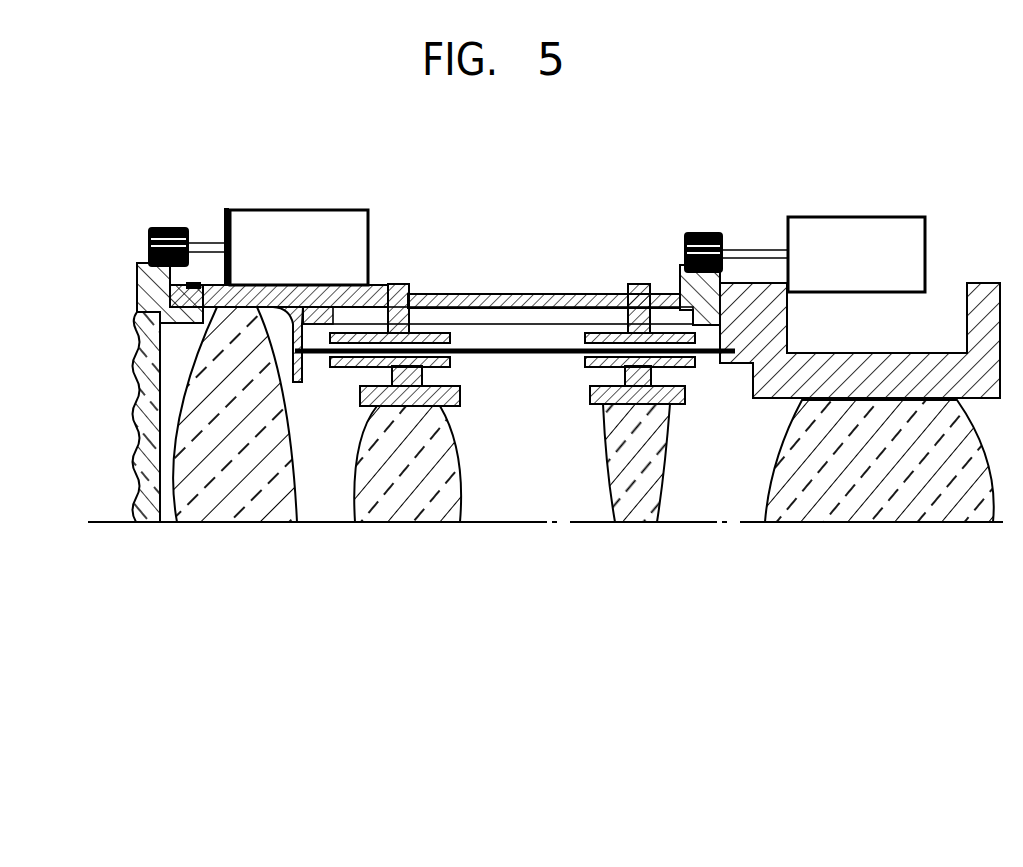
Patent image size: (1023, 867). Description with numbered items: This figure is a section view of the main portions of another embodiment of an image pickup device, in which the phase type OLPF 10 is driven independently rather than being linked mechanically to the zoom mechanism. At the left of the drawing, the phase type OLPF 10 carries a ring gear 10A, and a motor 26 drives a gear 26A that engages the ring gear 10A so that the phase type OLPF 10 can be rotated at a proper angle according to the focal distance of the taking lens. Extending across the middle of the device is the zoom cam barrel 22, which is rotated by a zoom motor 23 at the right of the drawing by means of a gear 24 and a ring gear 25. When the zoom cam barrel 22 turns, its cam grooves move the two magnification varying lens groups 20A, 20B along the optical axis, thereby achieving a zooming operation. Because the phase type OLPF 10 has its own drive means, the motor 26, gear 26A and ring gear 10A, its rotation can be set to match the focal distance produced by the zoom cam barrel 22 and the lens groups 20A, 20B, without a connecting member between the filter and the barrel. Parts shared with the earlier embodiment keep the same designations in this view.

The phase type OLPF 10 is at (136, 443).
The ring gear 10A is at (138, 264).
The magnification varying lens group 20A is at (460, 486).
The magnification varying lens group 20B is at (613, 488).
The zoom cam barrel 22 is at (470, 294).
The zoom motor 23 is at (857, 217).
The gear 24 is at (705, 233).
The ring gear 25 is at (680, 266).
The motor 26 is at (305, 210).
The gear 26A is at (168, 228).